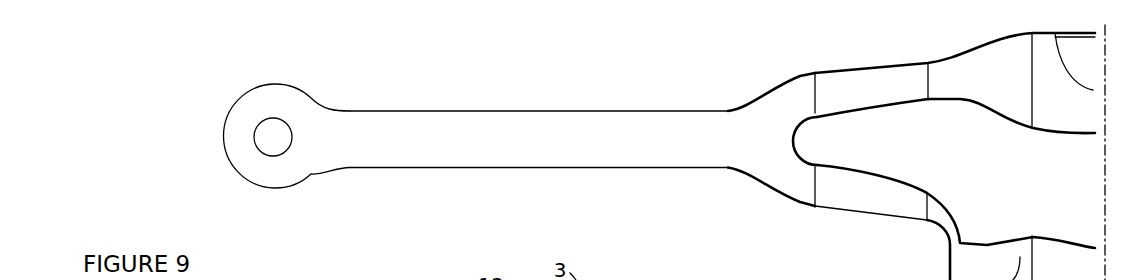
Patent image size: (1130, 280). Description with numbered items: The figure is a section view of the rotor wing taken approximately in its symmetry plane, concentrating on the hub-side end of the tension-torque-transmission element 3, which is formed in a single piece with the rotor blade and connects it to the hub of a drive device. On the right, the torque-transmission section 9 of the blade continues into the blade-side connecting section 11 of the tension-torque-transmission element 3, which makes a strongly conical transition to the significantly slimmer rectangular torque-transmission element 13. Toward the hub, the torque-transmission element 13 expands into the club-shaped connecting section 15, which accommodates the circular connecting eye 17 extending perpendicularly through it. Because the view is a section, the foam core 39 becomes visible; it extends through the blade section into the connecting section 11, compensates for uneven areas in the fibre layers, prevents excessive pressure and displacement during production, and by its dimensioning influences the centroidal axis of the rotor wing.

The tension-torque-transmission element 3 is at (519, 137).
The torque-transmission section 9 is at (858, 203).
The blade-side connecting section 11 is at (772, 172).
The torque-transmission element 13 is at (450, 157).
The club-shaped connecting section 15 is at (302, 108).
The connecting eye 17 is at (274, 140).
The foam core 39 is at (1008, 178).